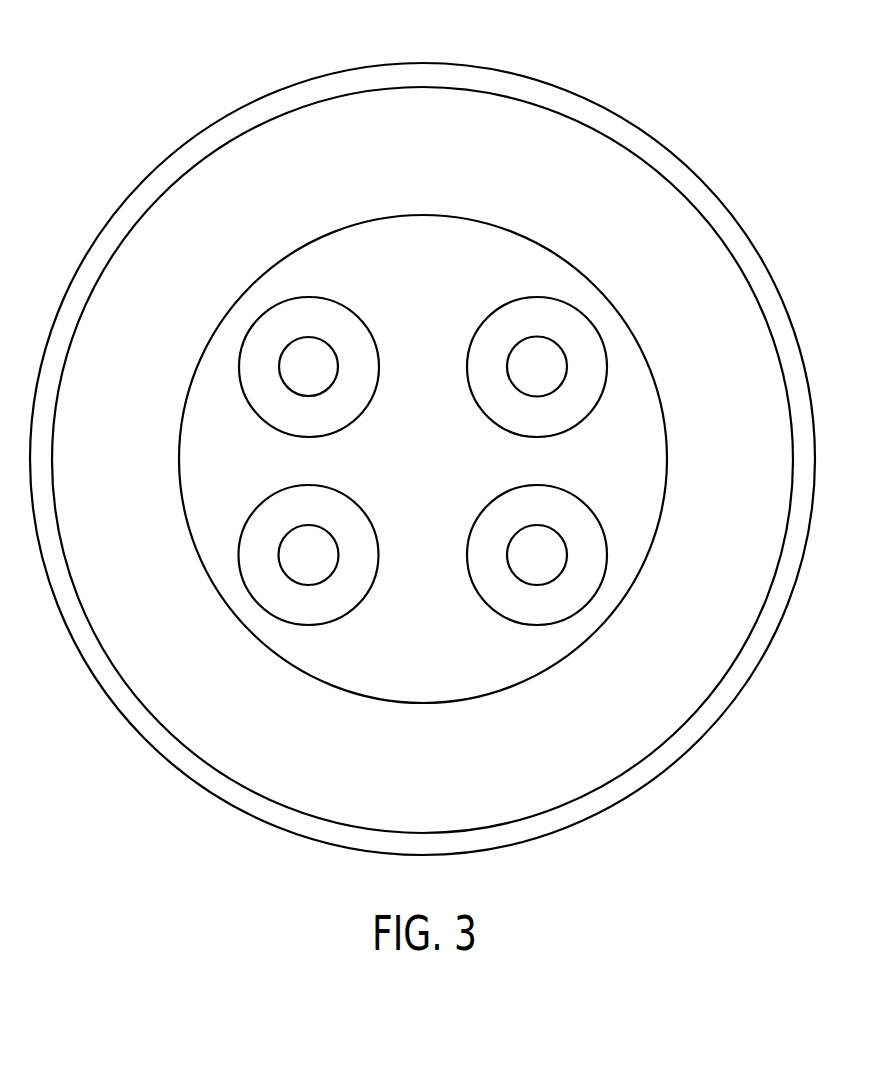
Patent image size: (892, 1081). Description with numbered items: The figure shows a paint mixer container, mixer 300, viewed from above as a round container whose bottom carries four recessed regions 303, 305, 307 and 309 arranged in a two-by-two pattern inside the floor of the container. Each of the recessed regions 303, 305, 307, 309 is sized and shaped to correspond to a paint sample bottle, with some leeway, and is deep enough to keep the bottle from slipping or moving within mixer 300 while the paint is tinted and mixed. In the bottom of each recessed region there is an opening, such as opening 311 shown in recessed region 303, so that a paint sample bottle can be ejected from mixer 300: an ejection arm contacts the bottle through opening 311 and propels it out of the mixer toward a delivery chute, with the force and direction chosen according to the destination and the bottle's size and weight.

The mixer 300 is at (423, 150).
The recessed region 303 is at (324, 314).
The recessed region 305 is at (521, 313).
The recessed region 307 is at (324, 503).
The recessed region 309 is at (521, 503).
The opening 311 is at (325, 373).